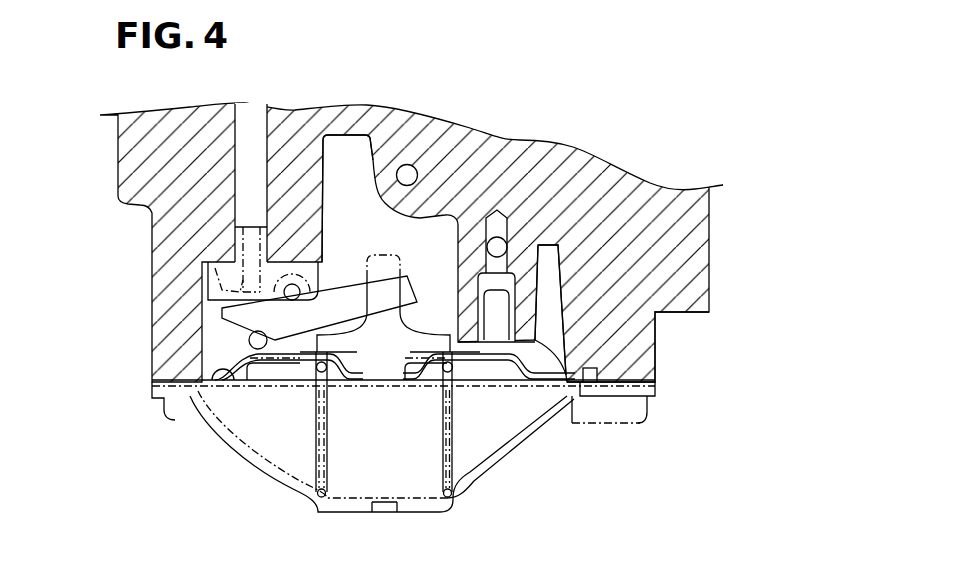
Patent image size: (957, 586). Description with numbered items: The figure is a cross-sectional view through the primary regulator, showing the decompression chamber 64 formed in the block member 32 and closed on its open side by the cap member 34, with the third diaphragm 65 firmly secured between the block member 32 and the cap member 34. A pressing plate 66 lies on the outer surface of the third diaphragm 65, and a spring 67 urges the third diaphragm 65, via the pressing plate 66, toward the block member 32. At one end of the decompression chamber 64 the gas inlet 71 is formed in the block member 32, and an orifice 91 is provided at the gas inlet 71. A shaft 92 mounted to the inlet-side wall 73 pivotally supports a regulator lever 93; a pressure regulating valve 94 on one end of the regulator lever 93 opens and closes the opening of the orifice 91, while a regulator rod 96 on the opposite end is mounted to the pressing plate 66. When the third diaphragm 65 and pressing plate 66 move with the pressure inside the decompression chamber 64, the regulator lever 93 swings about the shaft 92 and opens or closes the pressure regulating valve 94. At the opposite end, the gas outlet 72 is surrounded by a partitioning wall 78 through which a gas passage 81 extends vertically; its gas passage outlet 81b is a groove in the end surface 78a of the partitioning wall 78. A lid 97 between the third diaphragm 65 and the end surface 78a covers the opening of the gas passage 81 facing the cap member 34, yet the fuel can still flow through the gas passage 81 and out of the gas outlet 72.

The block member 32 is at (707, 231).
The decompression chamber 64 is at (345, 191).
The gas passage 81 is at (492, 330).
The gas passage outlet 81b is at (500, 345).
The gas outlet 72 is at (540, 290).
The partitioning wall 78 is at (530, 330).
The end surface 78a is at (573, 387).
The lid 97 is at (530, 347).
The gas inlet 71 is at (208, 265).
The orifice 91 is at (233, 282).
The inlet-side wall 73 is at (222, 312).
The pressure regulating valve 94 is at (260, 325).
The shaft 92 is at (360, 297).
The regulator rod 96 is at (332, 358).
The third diaphragm 65 is at (197, 395).
The regulator lever 93 is at (235, 362).
The cap member 34 is at (553, 430).
The pressing plate 66 is at (310, 345).
The spring 67 is at (428, 470).